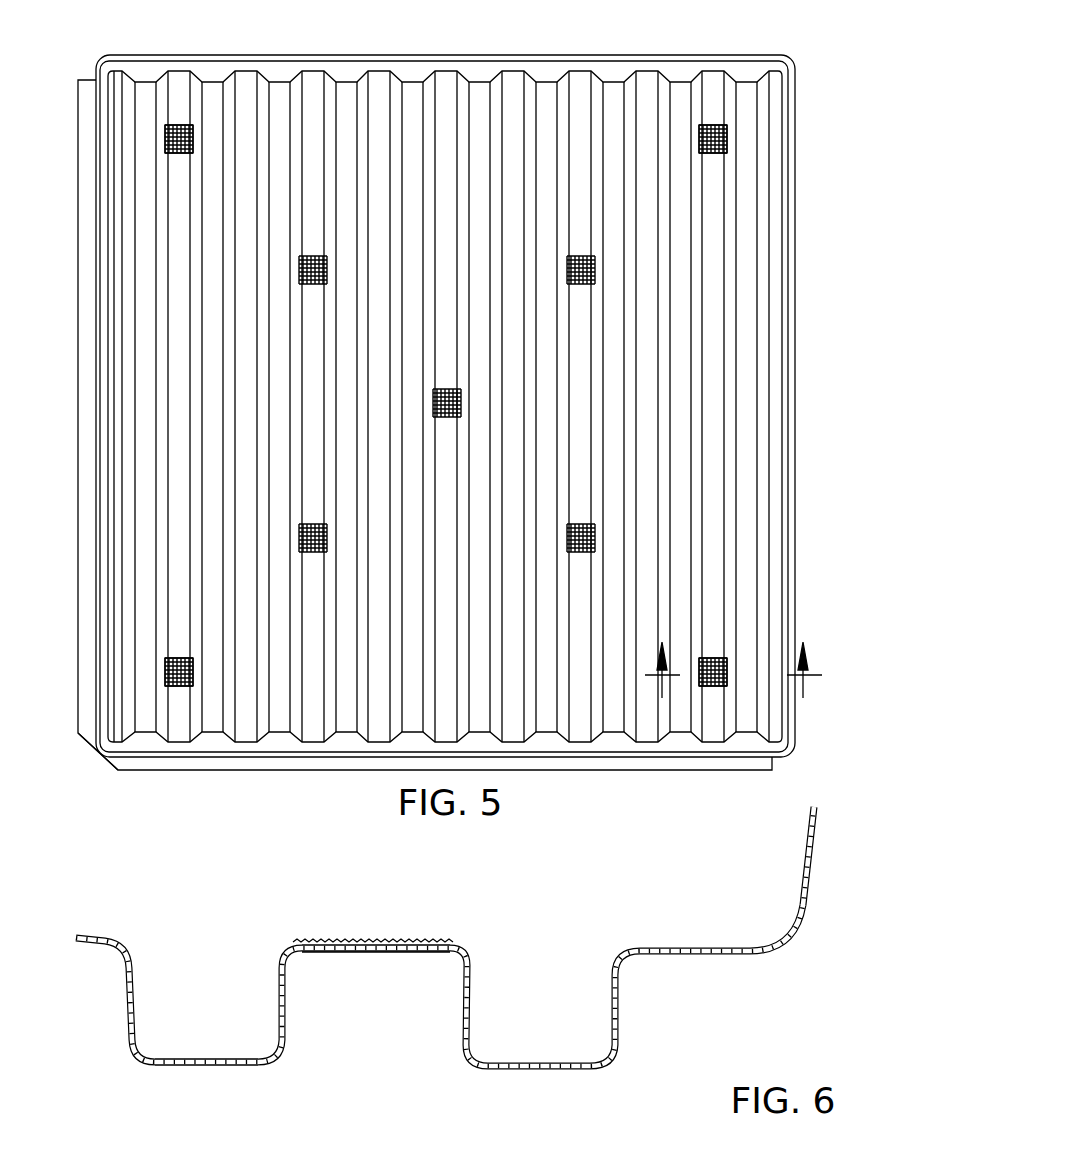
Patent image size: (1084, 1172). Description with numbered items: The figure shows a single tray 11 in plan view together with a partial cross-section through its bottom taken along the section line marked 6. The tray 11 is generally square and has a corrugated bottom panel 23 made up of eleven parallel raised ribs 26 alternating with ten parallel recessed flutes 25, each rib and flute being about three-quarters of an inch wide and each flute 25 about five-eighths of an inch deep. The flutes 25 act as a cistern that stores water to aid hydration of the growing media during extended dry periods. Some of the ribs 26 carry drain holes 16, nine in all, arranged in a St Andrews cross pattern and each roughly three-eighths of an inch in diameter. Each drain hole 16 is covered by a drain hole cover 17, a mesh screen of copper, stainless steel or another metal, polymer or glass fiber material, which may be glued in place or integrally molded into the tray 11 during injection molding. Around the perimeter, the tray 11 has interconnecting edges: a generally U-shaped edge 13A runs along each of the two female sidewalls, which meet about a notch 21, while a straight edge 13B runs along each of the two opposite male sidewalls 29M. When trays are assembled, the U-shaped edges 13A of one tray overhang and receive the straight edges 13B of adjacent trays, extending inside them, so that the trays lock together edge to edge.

In FIG. 5, the tray 11 is at (445, 371).
In FIG. 6, the tray 11 is at (738, 983).
In FIG. 5, the U-shaped edge 13A is at (82, 388).
In FIG. 5, the straight edge 13B is at (600, 55).
In FIG. 5, the drain hole 16 is at (173, 127).
In FIG. 6, the drain hole 16 is at (392, 955).
In FIG. 5, the drain hole cover 17 is at (189, 128).
In FIG. 6, the drain hole cover 17 is at (372, 940).
In FIG. 5, the notch 21 is at (97, 755).
In FIG. 6, the corrugated bottom panel 23 is at (113, 1049).
In FIG. 5, the recessed flute 25 is at (412, 80).
In FIG. 6, the recessed flute 25 is at (215, 1055).
In FIG. 5, the raised rib 26 is at (250, 70).
In FIG. 6, the raised rib 26 is at (293, 948).
In FIG. 6, the male sidewall 29M is at (807, 835).
In FIG. 5, the section line 6- 6 is at (731, 673).